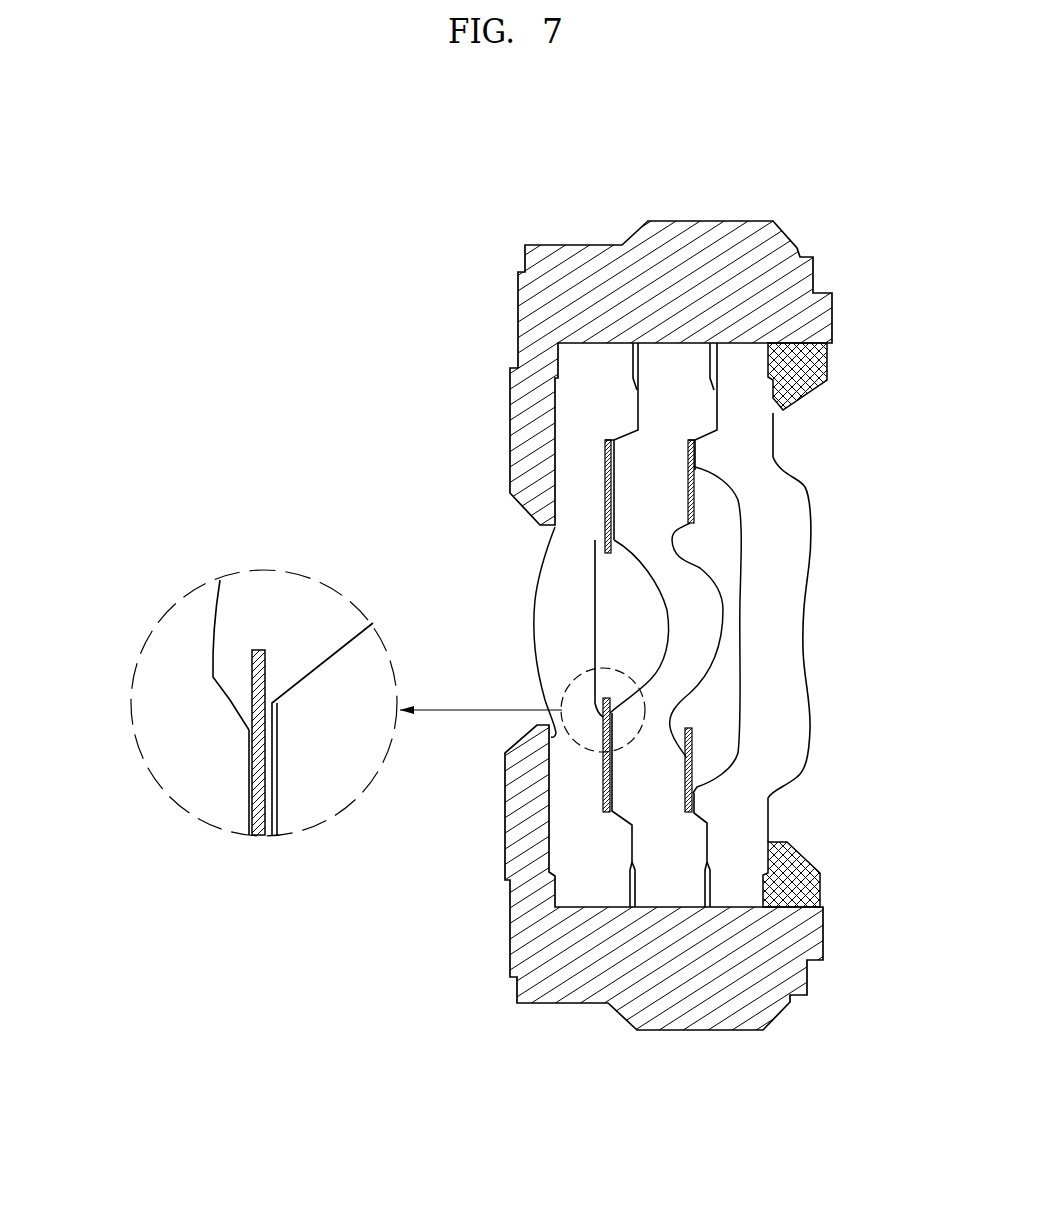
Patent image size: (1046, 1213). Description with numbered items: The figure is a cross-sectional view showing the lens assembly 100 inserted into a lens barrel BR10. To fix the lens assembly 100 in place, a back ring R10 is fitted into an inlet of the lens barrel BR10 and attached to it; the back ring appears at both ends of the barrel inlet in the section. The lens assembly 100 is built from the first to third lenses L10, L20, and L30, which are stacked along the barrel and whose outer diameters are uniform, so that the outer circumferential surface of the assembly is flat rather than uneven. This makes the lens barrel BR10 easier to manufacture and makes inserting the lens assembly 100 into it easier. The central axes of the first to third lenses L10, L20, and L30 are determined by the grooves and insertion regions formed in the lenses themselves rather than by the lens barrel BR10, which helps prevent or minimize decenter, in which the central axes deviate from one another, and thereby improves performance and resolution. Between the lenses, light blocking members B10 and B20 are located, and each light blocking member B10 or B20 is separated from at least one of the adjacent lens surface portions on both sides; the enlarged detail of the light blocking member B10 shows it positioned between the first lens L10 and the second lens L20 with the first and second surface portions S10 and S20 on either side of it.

The lens assembly 100 is at (533, 603).
The lens barrel BR10 is at (712, 214).
The back ring R10 is at (828, 370).
The first lens L10 is at (208, 802).
The second lens L20 is at (312, 802).
The third lens L30 is at (742, 898).
The light blocking member B10 is at (600, 540).
The light blocking member B20 is at (690, 505).
The first surface portion S10 is at (250, 755).
The second surface portion S20 is at (277, 758).